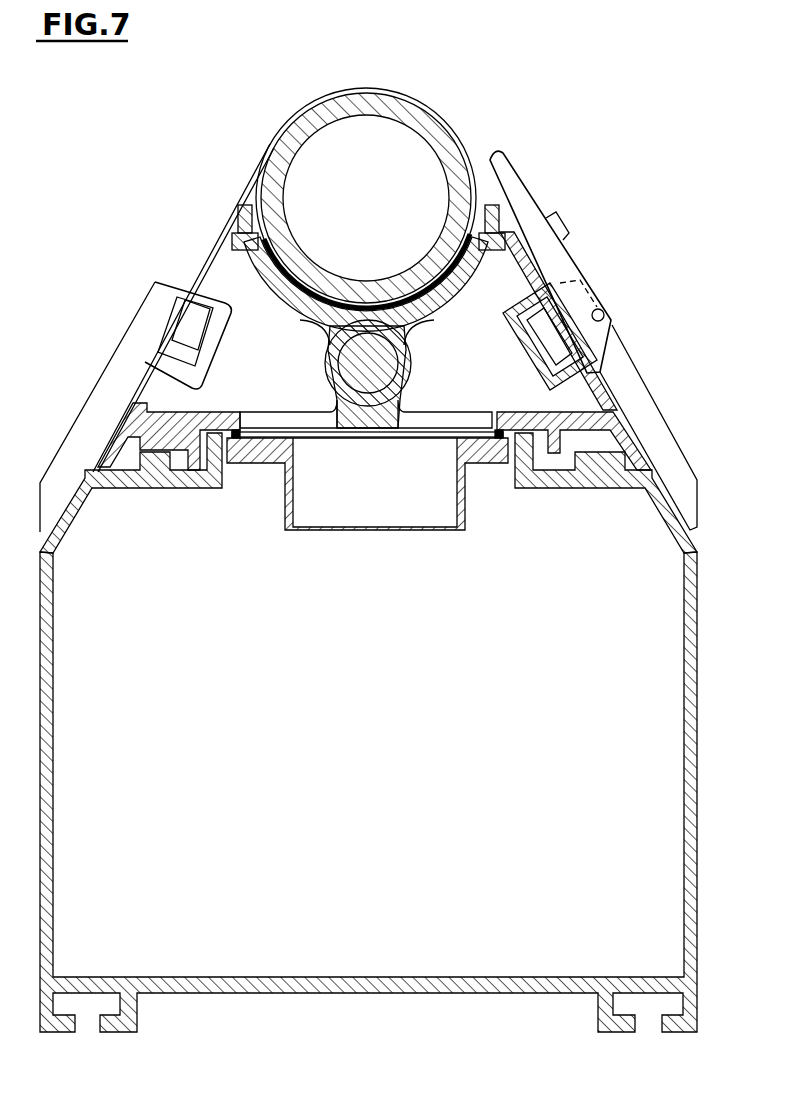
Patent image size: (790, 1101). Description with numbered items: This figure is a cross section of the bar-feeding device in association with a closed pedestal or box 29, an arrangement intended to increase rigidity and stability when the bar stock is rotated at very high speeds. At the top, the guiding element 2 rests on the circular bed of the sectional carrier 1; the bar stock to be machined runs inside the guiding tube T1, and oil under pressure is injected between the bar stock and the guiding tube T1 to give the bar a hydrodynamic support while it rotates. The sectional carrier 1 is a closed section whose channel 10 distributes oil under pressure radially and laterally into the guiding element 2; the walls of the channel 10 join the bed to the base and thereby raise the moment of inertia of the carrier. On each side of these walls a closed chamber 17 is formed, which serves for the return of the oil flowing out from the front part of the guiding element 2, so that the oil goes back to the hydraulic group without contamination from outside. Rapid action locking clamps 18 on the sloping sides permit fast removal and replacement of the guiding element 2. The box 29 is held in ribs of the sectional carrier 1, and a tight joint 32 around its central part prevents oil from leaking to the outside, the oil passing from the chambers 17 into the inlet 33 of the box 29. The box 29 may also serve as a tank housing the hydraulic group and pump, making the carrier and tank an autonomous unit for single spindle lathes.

The sectional carrier 1 is at (213, 250).
The guiding element 2 is at (366, 169).
The guiding tube T1 is at (397, 107).
The channel 10 is at (383, 368).
The chamber 17 is at (274, 383).
The rapid action locking clamp 18 is at (607, 322).
The box 29 is at (688, 758).
The tight joint 32 is at (497, 440).
The inlet 33 is at (397, 512).